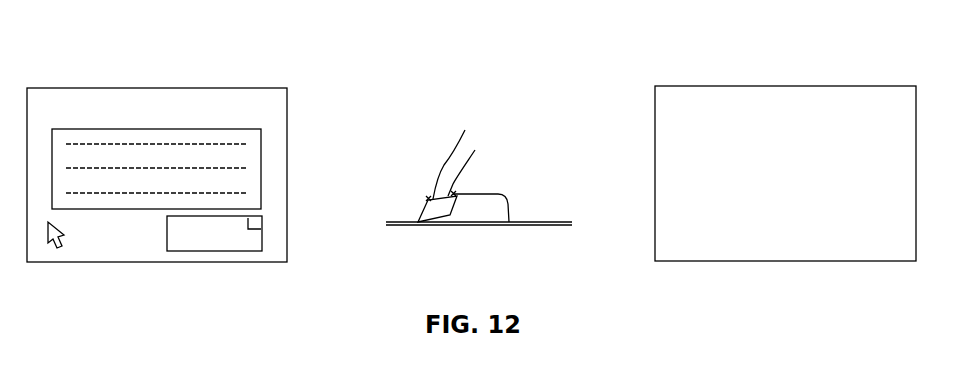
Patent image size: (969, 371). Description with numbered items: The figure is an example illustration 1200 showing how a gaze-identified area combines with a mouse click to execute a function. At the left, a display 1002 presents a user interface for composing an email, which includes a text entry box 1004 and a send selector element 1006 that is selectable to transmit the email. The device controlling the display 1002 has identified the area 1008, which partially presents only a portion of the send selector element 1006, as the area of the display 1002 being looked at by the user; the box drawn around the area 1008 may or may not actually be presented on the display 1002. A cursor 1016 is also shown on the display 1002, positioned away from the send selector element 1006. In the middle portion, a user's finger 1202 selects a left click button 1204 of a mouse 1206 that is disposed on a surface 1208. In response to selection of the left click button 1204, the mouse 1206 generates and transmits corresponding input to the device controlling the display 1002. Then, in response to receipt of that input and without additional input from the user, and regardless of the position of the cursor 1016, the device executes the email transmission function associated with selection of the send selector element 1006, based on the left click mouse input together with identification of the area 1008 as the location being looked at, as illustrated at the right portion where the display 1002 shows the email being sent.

The display 1002 is at (228, 88).
The text entry box 1004 is at (207, 129).
The send selector element 1006 is at (167, 229).
The area 1008 is at (262, 216).
The cursor 1016 is at (52, 249).
The example illustration 1200 is at (407, 72).
The finger 1202 is at (467, 129).
The left click button 1204 is at (422, 208).
The mouse 1206 is at (508, 200).
The surface 1208 is at (513, 226).